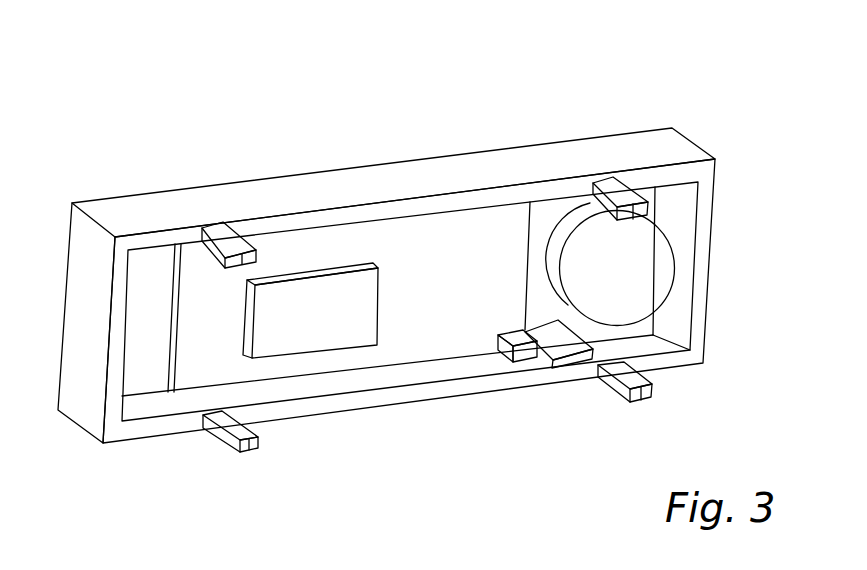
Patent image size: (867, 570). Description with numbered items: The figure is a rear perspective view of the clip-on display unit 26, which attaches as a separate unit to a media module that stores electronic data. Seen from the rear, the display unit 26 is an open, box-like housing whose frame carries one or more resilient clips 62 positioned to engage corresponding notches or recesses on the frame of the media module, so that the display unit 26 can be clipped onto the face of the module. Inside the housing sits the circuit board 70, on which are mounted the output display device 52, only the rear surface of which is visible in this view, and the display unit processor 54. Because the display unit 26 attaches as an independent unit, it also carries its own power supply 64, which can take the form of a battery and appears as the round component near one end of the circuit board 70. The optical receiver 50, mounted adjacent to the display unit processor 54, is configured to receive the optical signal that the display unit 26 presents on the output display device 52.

The display unit 26 is at (424, 126).
The circuit board 70 is at (458, 327).
The output display device 52 is at (310, 313).
The power supply 64 is at (650, 258).
The optical receiver 50 is at (575, 365).
The display unit processor 54 is at (523, 353).
The resilient clips 62 is at (243, 427).